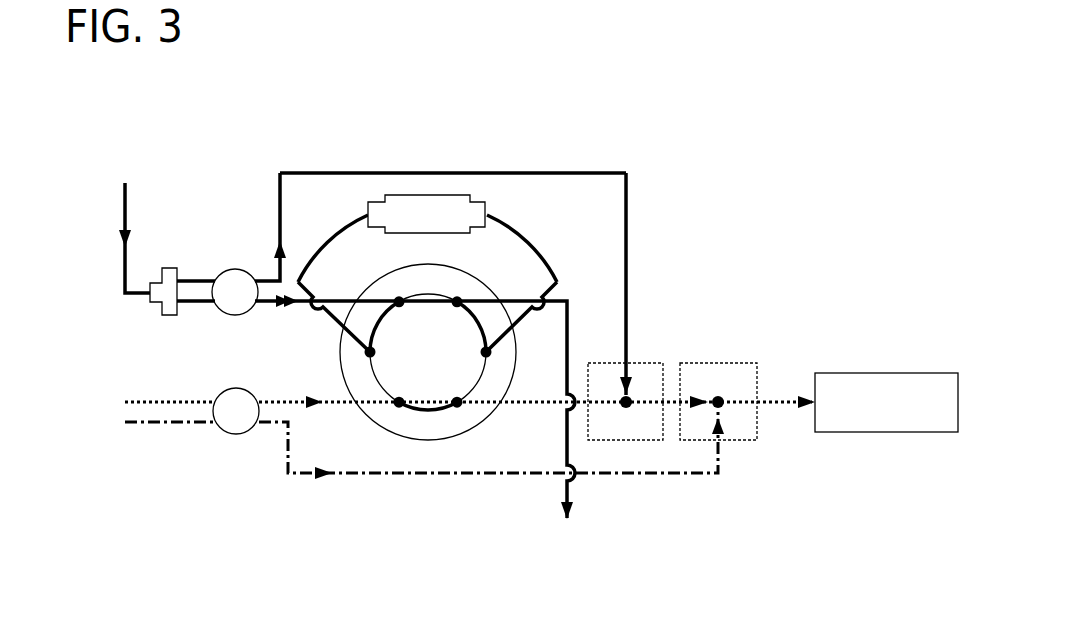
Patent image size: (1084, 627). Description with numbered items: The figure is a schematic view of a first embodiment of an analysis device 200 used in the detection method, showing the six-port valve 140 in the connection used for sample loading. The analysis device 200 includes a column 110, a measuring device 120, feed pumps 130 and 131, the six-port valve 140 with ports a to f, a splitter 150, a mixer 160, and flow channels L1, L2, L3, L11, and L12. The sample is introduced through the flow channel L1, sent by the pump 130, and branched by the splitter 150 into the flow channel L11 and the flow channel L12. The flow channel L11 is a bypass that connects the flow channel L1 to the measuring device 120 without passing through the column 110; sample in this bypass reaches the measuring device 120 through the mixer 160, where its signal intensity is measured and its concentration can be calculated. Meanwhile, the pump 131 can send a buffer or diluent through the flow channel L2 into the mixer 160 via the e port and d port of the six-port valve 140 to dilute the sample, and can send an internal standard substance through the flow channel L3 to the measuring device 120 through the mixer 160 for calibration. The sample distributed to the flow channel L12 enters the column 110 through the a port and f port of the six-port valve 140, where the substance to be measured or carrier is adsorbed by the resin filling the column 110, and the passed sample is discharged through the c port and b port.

The analysis device 200 is at (807, 110).
The column 110 is at (424, 205).
The measuring device 120 is at (887, 372).
The feed pump 130 is at (233, 268).
The feed pump 131 is at (237, 436).
The six-port valve 140 is at (428, 440).
The splitter 150 is at (170, 267).
The mixer 160 is at (587, 348).
The flow channel L1 is at (122, 203).
The flow channel L2 is at (133, 399).
The flow channel L3 is at (133, 425).
The flow channel L11 is at (200, 279).
The flow channel L12 is at (198, 304).